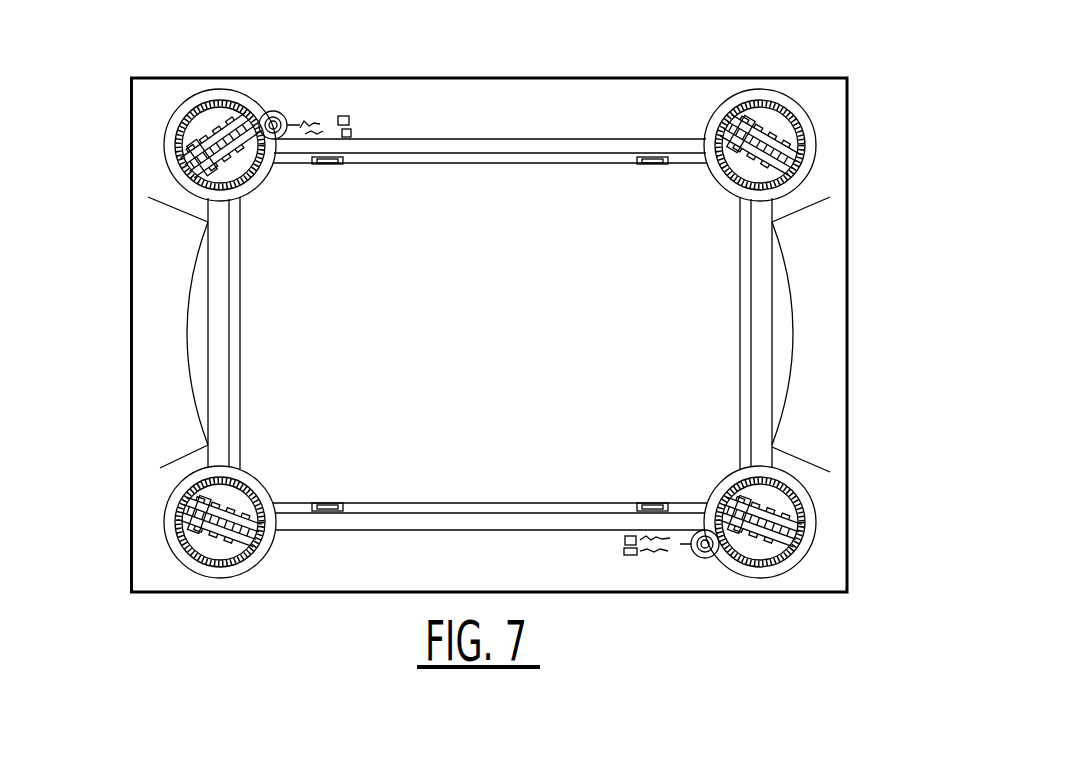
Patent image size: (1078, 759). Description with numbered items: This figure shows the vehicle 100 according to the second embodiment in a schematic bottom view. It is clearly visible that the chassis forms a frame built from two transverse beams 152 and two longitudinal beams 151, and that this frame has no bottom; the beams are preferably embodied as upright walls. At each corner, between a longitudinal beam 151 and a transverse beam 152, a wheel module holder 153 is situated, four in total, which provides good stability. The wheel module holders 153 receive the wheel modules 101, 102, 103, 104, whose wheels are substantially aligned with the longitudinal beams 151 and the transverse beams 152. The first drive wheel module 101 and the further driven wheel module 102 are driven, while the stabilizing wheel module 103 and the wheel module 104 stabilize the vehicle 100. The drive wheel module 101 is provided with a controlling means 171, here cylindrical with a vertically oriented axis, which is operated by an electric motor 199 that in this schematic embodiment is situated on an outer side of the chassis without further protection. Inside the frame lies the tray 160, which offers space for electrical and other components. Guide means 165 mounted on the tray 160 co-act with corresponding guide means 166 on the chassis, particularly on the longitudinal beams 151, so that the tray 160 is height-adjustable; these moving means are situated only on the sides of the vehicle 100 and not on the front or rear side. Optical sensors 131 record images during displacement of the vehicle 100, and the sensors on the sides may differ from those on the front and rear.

The vehicle 100 is at (872, 244).
The first drive wheel module 101 is at (783, 523).
The driven wheel module 102 is at (173, 150).
The stabilizing wheel module 103 is at (772, 148).
The wheel module 104 is at (190, 508).
The optical sensor 131 is at (777, 285).
The longitudinal beam 151 is at (447, 525).
The transverse beam 152 is at (760, 325).
The wheel module holder 153 is at (243, 107).
The tray 160 is at (522, 268).
The guide means 165 is at (323, 163).
The guide means 166 is at (648, 167).
The controlling means 171 is at (708, 560).
The electric motor 199 is at (660, 550).